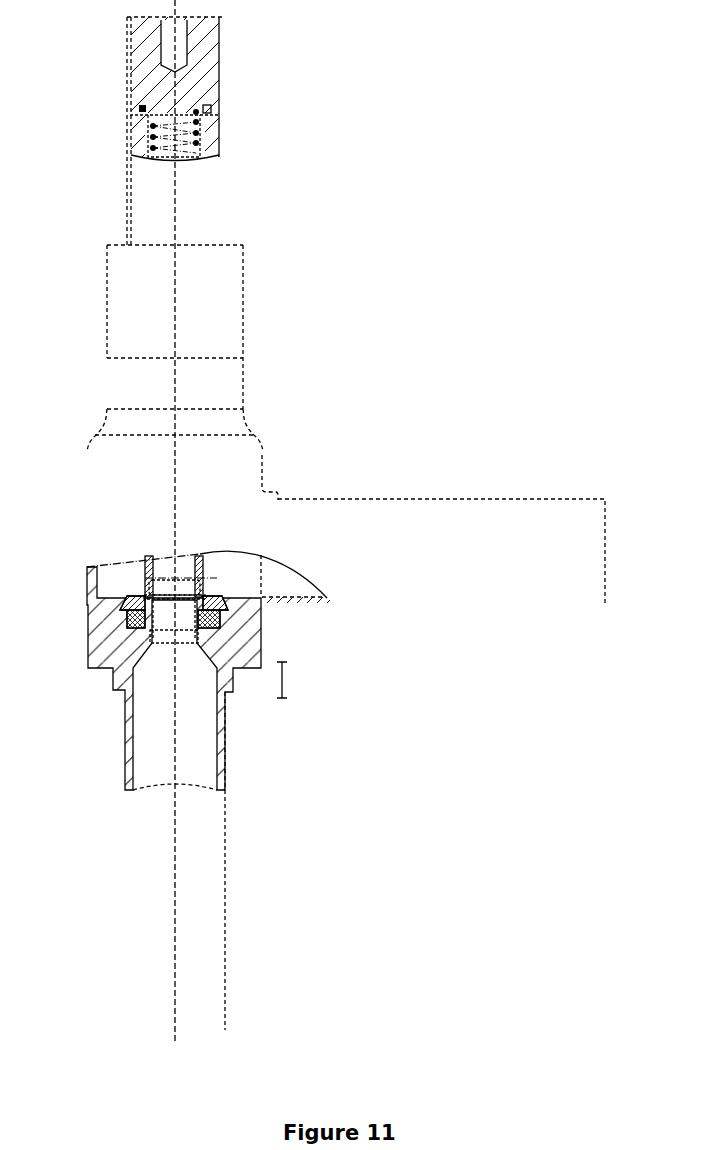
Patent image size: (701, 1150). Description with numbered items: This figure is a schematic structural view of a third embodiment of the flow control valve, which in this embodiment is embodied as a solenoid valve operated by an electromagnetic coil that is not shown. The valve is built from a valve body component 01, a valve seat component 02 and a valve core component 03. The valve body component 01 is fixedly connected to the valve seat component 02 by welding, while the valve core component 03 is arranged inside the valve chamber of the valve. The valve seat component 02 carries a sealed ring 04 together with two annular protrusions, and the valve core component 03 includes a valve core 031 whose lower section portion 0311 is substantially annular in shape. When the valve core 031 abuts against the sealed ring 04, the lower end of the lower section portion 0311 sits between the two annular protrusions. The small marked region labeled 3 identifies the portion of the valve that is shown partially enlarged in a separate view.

The valve body component 01 is at (228, 415).
The valve seat component 02 is at (242, 632).
The valve core component 03 is at (204, 569).
The valve core 031 is at (174, 589).
The lower section portion 0311 is at (210, 603).
The sealed ring 04 is at (132, 624).
The detail indicator 3 is at (237, 663).